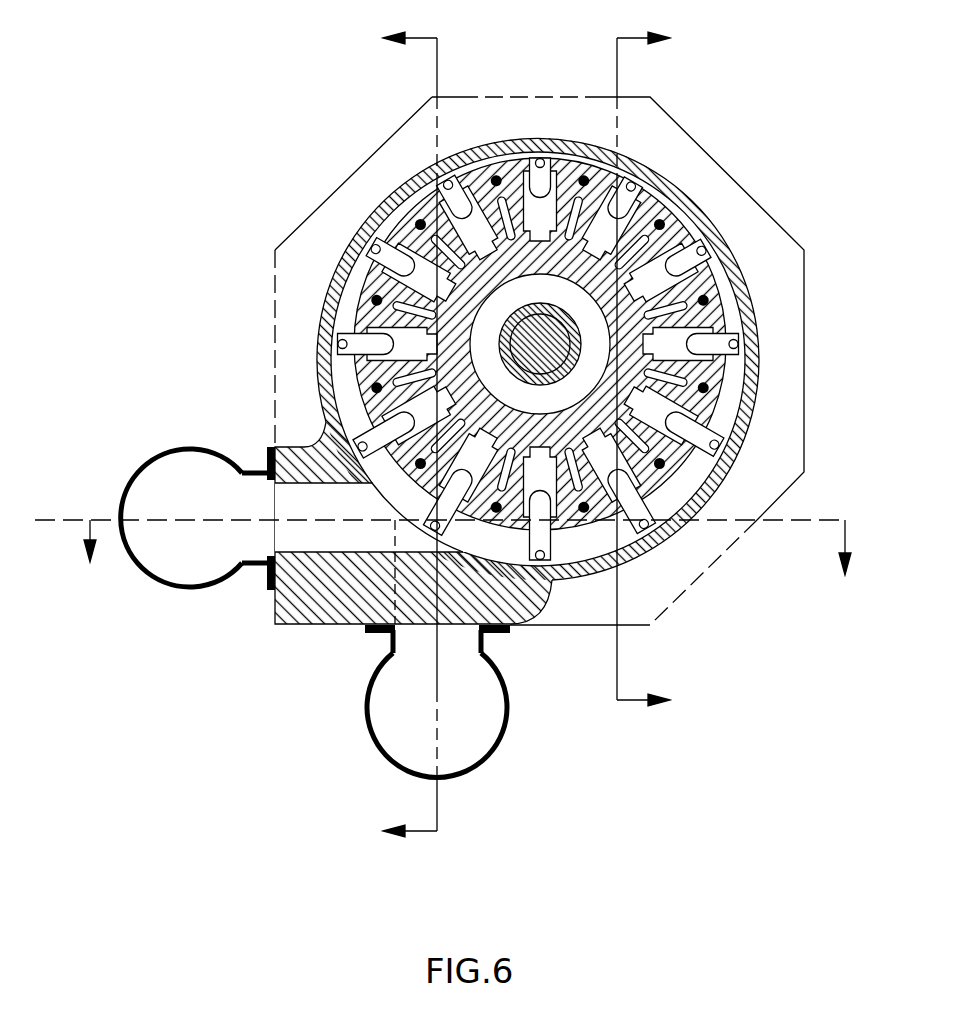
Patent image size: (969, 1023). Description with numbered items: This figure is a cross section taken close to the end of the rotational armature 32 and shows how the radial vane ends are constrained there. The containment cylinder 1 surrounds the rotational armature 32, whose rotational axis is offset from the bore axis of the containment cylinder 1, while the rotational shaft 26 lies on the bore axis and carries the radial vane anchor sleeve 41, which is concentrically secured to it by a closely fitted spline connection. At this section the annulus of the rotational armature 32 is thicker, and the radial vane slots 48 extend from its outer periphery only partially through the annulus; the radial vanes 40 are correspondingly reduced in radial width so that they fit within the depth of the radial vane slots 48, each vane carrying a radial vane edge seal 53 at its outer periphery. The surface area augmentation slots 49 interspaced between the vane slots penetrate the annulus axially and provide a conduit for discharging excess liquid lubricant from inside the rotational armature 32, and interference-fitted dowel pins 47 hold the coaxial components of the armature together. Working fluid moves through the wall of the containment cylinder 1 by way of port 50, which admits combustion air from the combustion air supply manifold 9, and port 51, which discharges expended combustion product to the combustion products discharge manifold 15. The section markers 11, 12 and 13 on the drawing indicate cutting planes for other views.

The containment cylinder 1 is at (740, 262).
The combustion air supply manifold 9 is at (148, 462).
The combustion products discharge manifold 15 is at (365, 690).
The rotational shaft 26 is at (556, 382).
The rotational armature 32 is at (322, 310).
The radial vane 40 is at (318, 398).
The radial vane anchor sleeve 41 is at (545, 350).
The dowel pin 47 is at (342, 270).
The radial vane slot 48 is at (420, 185).
The surface area augmentation slot 49 is at (383, 205).
The port 50 is at (337, 552).
The port 51 is at (400, 583).
The radial vane edge seal 53 is at (357, 233).
The section line 11- 11 is at (460, 547).
The section line 12- 12 is at (410, 420).
The section line 13- 13 is at (643, 355).